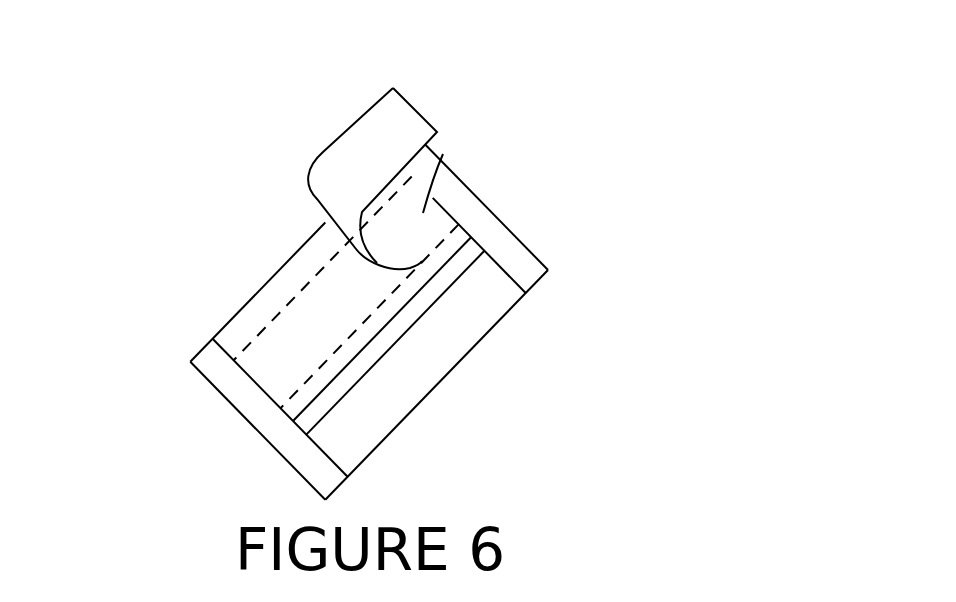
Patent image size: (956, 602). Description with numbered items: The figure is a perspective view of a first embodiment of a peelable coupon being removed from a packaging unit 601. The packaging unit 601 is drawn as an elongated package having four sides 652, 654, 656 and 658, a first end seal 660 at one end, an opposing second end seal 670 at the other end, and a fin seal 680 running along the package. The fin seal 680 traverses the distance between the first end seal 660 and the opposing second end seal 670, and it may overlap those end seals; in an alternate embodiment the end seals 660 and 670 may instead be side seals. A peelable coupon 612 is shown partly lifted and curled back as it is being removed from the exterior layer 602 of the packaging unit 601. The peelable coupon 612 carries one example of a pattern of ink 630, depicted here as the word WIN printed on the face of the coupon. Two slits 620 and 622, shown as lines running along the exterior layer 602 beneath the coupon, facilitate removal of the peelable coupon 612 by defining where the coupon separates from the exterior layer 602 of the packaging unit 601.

The packaging unit 601 is at (377, 264).
The exterior layer 602 is at (282, 352).
The peelable coupon 612 is at (443, 154).
The slit 620 is at (272, 320).
The slit 622 is at (331, 364).
The pattern of ink 630 is at (353, 173).
The side 652 is at (476, 187).
The side 654 is at (489, 341).
The side 656 is at (232, 408).
The side 658 is at (286, 265).
The first end seal 660 is at (510, 246).
The second end seal 670 is at (287, 433).
The fin seal 680 is at (390, 332).